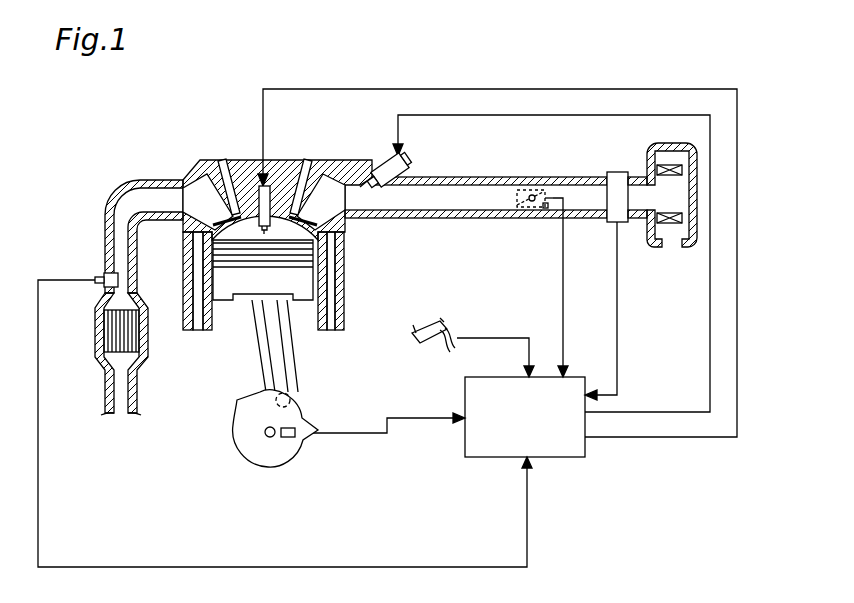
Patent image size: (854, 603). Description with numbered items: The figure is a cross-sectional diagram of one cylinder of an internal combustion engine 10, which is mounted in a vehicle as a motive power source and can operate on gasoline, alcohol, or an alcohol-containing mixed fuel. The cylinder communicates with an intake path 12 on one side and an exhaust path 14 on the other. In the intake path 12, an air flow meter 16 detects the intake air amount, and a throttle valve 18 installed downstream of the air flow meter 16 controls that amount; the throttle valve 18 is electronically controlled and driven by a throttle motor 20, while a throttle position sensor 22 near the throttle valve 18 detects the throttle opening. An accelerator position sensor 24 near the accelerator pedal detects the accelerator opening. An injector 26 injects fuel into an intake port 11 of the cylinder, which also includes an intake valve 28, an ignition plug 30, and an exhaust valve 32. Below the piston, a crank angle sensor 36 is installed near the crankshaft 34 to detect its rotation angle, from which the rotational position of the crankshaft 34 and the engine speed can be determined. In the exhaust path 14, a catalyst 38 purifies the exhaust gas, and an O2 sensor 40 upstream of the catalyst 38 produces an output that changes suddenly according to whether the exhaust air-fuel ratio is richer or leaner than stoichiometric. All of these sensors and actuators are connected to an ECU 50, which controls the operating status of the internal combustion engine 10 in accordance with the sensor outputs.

The internal combustion engine 10 is at (358, 312).
The intake port 11 is at (350, 220).
The intake path 12 is at (494, 170).
The exhaust path 14 is at (108, 200).
The air flow meter 16 is at (615, 180).
The throttle valve 18 is at (533, 195).
The throttle motor 20 is at (517, 196).
The throttle position sensor 22 is at (548, 208).
The accelerator position sensor 24 is at (458, 330).
The injector 26 is at (408, 166).
The intake valve 28 is at (335, 190).
The ignition plug 30 is at (288, 190).
The exhaust valve 32 is at (203, 188).
The crankshaft 34 is at (268, 440).
The crank angle sensor 36 is at (290, 440).
The catalyst 38 is at (104, 328).
The O2 sensor 40 is at (96, 274).
The ECU 50 is at (472, 458).